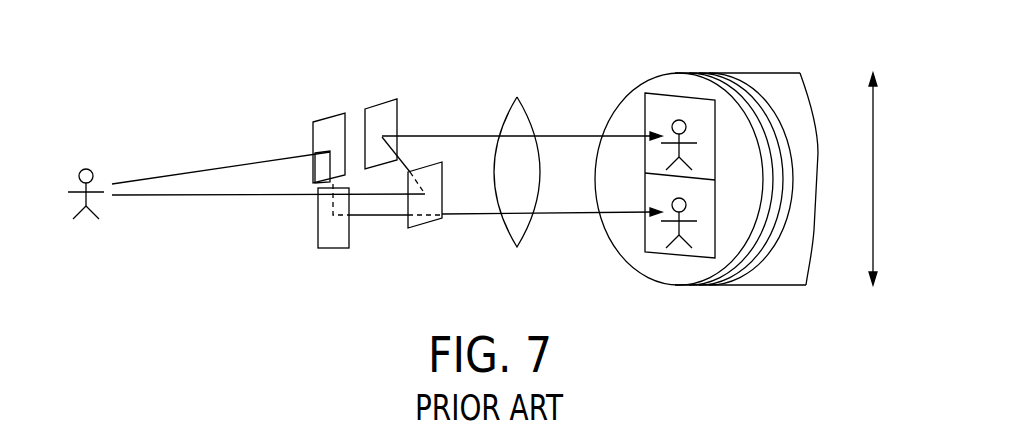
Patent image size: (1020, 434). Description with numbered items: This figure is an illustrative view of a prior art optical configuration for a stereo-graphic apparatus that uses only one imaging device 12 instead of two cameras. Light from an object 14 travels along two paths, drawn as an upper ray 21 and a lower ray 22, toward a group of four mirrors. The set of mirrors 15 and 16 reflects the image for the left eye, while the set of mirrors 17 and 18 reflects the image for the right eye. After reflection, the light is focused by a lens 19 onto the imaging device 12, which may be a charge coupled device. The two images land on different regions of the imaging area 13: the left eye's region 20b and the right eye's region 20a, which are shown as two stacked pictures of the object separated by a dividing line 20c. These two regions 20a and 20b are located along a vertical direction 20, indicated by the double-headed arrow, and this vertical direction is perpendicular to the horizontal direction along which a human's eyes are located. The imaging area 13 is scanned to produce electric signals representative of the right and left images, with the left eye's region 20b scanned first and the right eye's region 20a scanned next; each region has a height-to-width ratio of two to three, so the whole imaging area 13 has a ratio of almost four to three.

The imaging device 12 is at (693, 63).
The imaging area 13 is at (725, 115).
The object 14 is at (95, 175).
The mirror 15 is at (328, 117).
The mirror 16 is at (330, 248).
The mirror 17 is at (428, 228).
The mirror 18 is at (378, 102).
The lens 19 is at (528, 118).
The vertical direction 20 is at (873, 173).
The right eye's region 20a is at (710, 212).
The left eye's region 20b is at (707, 137).
The image divider 20c is at (713, 178).
The upper light ray 21 is at (237, 163).
The lower light ray 22 is at (240, 196).